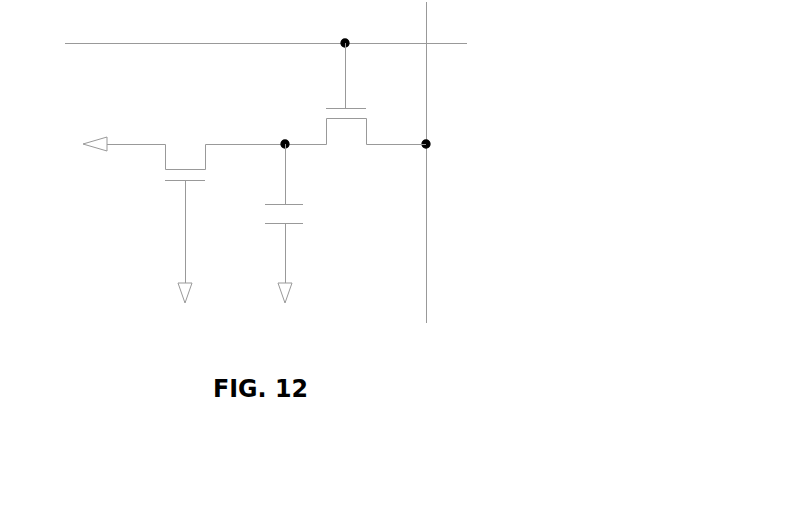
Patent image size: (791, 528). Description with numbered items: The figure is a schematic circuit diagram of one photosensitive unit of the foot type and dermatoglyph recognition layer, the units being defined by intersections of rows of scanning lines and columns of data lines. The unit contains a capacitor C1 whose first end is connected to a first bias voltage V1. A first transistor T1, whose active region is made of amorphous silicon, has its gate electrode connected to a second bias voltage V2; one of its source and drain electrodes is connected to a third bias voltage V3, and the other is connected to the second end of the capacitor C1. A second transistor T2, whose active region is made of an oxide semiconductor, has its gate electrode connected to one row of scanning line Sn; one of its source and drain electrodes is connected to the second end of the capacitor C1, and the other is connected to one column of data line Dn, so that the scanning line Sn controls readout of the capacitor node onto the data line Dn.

The scanning line Sn is at (266, 26).
The data line Dn is at (447, 162).
The first transistor T1 is at (196, 214).
The second transistor T2 is at (355, 92).
The capacitor C1 is at (306, 211).
The first bias voltage V1 is at (286, 311).
The second bias voltage V2 is at (186, 311).
The third bias voltage V3 is at (78, 145).